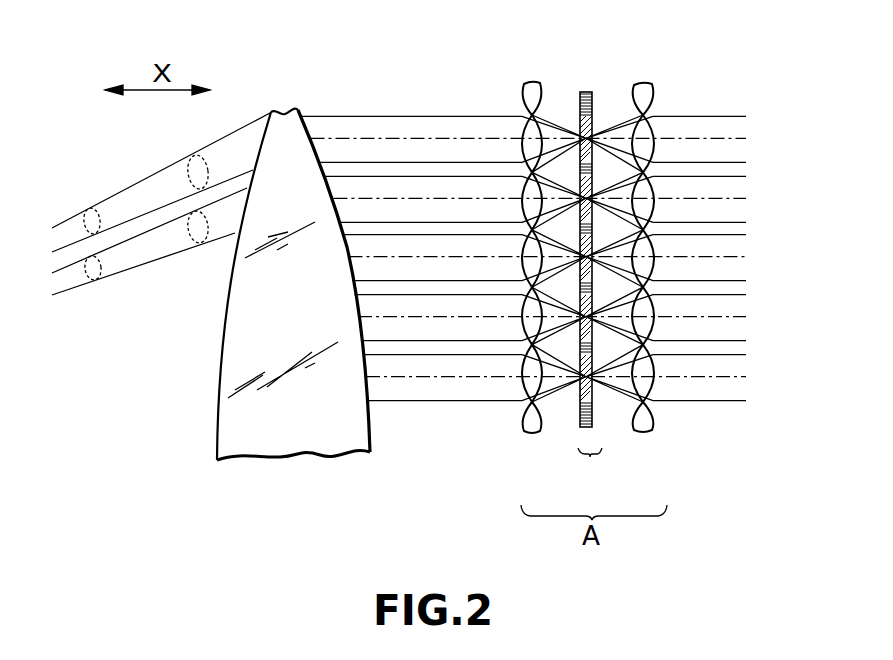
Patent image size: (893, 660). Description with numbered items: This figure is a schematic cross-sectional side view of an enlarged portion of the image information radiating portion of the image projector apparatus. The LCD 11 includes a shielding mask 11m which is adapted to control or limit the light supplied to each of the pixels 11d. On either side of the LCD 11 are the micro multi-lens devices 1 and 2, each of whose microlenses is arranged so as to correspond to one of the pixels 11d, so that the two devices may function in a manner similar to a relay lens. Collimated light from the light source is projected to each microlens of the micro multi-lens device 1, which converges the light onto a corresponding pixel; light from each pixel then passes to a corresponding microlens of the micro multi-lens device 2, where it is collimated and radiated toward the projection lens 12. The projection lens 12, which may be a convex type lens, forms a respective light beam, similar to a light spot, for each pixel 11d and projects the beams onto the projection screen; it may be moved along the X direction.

The projection lens 12 is at (284, 130).
The micro multi-lens device 2 is at (632, 257).
The pixel 11d is at (594, 130).
The shielding mask 11m is at (590, 92).
The LCD 11 is at (591, 468).
The micro multi-lens device 1 is at (647, 408).